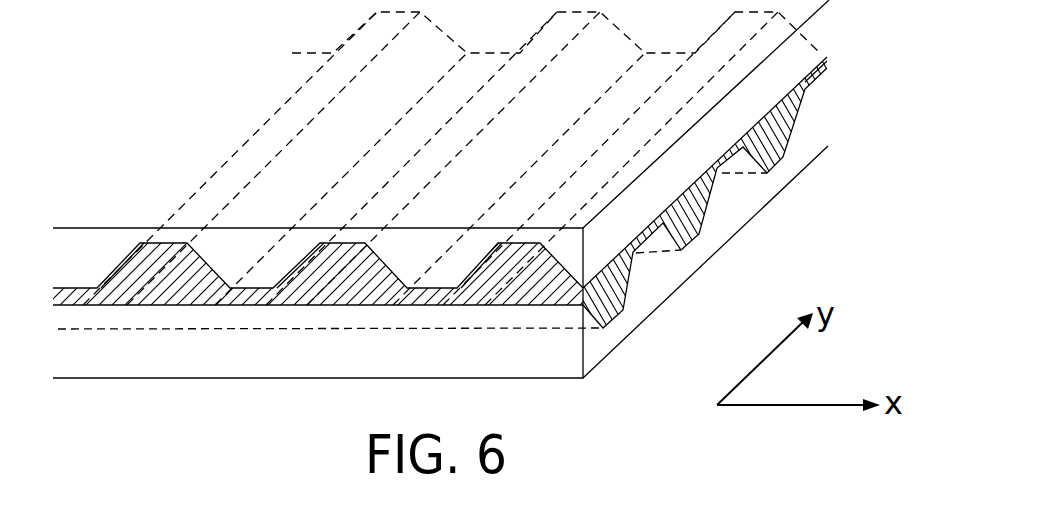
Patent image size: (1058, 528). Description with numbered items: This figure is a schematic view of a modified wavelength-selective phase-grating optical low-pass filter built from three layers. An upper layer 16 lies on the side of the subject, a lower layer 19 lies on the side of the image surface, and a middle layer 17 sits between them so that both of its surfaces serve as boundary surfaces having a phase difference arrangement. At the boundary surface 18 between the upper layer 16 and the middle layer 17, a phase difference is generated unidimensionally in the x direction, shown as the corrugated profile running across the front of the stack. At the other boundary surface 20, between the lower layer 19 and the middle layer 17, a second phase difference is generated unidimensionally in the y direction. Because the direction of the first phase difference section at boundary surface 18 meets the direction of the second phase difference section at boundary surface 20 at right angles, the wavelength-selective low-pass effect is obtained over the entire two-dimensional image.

The upper layer 16 is at (822, 20).
The middle layer 17 is at (827, 67).
The boundary surface 18 is at (827, 60).
The lower layer 19 is at (817, 130).
The boundary surface 20 is at (807, 93).